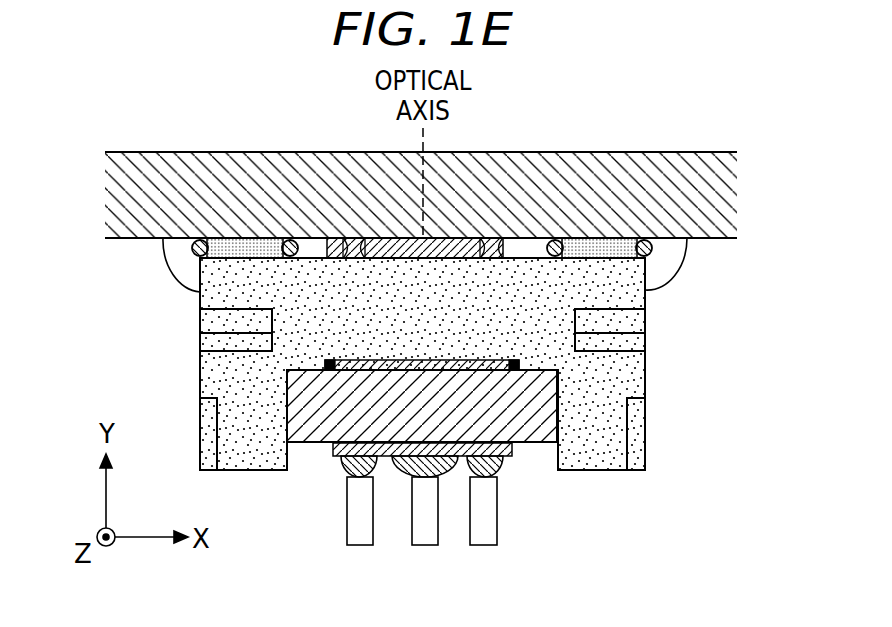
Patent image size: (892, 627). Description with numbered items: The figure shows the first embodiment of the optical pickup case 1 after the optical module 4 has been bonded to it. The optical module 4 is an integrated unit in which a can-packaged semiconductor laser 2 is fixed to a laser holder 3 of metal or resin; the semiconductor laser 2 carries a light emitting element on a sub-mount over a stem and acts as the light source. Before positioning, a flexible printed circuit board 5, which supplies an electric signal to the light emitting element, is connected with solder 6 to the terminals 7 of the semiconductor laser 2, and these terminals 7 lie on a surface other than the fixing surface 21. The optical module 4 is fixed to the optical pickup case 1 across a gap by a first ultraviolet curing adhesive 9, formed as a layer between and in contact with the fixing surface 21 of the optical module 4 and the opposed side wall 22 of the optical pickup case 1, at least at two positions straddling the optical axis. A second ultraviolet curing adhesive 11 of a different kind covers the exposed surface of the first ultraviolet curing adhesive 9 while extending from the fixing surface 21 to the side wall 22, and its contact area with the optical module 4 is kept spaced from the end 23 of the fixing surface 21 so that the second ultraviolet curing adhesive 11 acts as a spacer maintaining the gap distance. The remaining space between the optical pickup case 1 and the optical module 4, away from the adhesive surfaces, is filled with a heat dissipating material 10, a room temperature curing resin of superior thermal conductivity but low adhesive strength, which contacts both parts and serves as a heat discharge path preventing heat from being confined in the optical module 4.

The optical pickup case 1 is at (277, 162).
The semiconductor laser 2 is at (505, 415).
The laser holder 3 is at (635, 357).
The optical module 4 is at (725, 337).
The flexible printed circuit board 5 is at (512, 450).
The solder 6 is at (352, 463).
The terminals 7 is at (483, 517).
The first ultraviolet curing adhesive 9 is at (606, 248).
The heat dissipating material 10 is at (182, 272).
The second ultraviolet curing adhesive 11 is at (552, 242).
The fixing surface 21 is at (327, 258).
The side wall 22 is at (713, 240).
The end of the fixing surface 23 is at (650, 262).